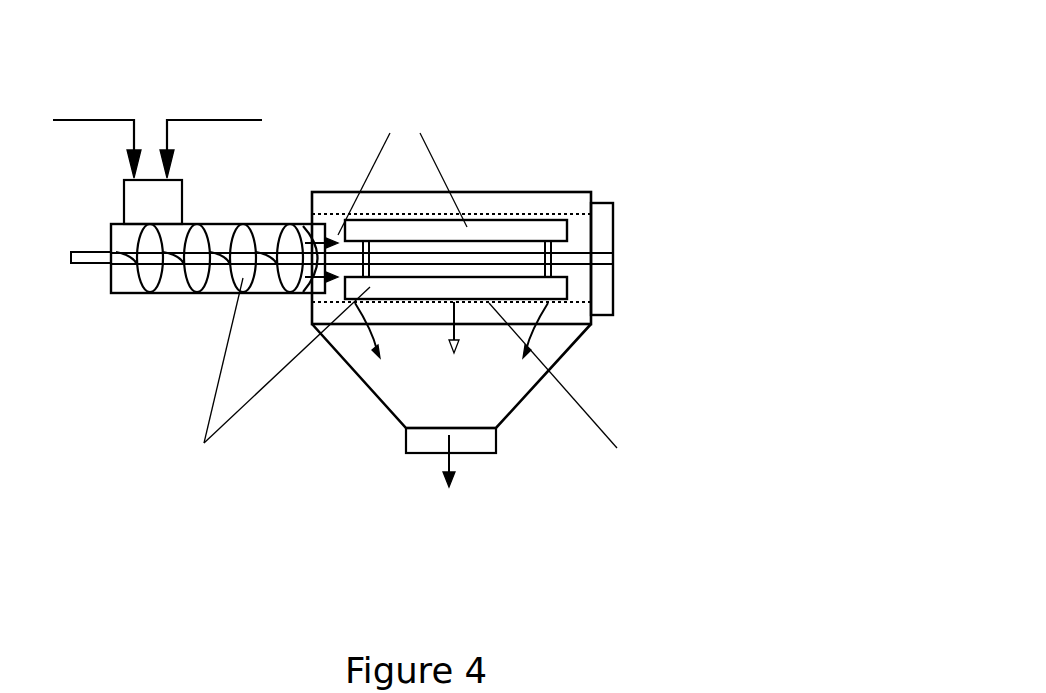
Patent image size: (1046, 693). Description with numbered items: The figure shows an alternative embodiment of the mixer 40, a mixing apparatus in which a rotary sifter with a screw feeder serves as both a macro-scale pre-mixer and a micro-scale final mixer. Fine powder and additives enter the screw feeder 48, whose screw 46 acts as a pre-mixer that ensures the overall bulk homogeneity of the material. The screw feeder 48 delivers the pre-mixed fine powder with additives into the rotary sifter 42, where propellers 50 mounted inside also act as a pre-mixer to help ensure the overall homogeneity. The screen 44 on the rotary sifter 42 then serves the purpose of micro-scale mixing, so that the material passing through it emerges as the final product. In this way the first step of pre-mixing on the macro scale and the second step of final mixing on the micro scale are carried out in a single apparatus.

The mixer 40 is at (610, 82).
The rotary sifter 42 is at (558, 185).
The screen 44 is at (582, 327).
The screw 46 is at (153, 242).
The screw feeder 48 is at (197, 293).
The propellers 50 is at (567, 285).